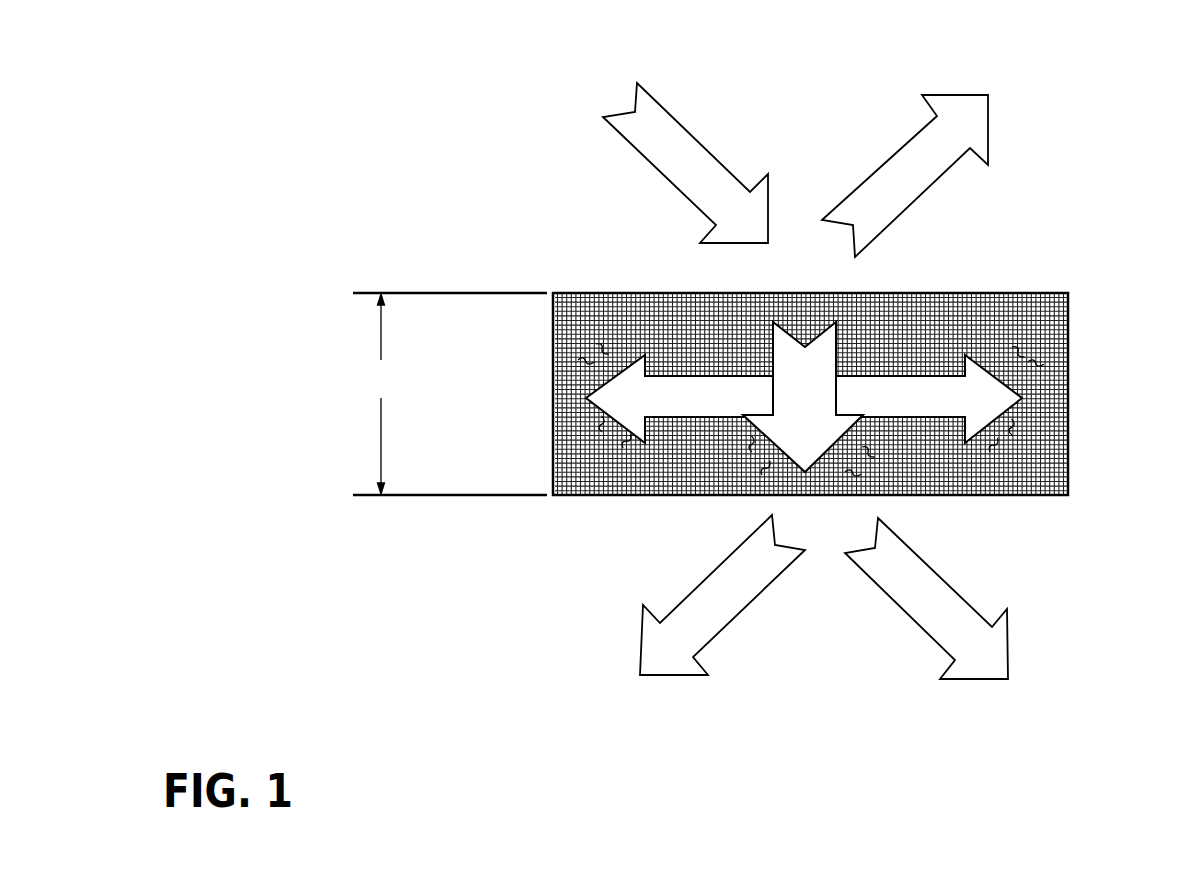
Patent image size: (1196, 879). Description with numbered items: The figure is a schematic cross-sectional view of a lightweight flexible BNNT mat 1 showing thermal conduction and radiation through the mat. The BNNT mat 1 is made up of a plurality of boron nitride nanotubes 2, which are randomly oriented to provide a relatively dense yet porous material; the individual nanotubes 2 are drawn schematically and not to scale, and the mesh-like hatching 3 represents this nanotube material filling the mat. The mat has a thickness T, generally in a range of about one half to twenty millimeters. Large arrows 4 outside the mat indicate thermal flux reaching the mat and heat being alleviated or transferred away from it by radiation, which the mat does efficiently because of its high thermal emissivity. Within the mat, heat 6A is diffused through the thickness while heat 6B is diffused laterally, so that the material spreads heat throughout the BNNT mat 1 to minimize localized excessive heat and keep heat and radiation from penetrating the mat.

The BNNT mat 1 is at (1070, 376).
The boron nitride nanotubes 2 is at (1018, 432).
The matrix mesh 3 is at (1040, 320).
The external loads 4 is at (892, 167).
The heat 6A is at (813, 360).
The heat 6B is at (672, 405).